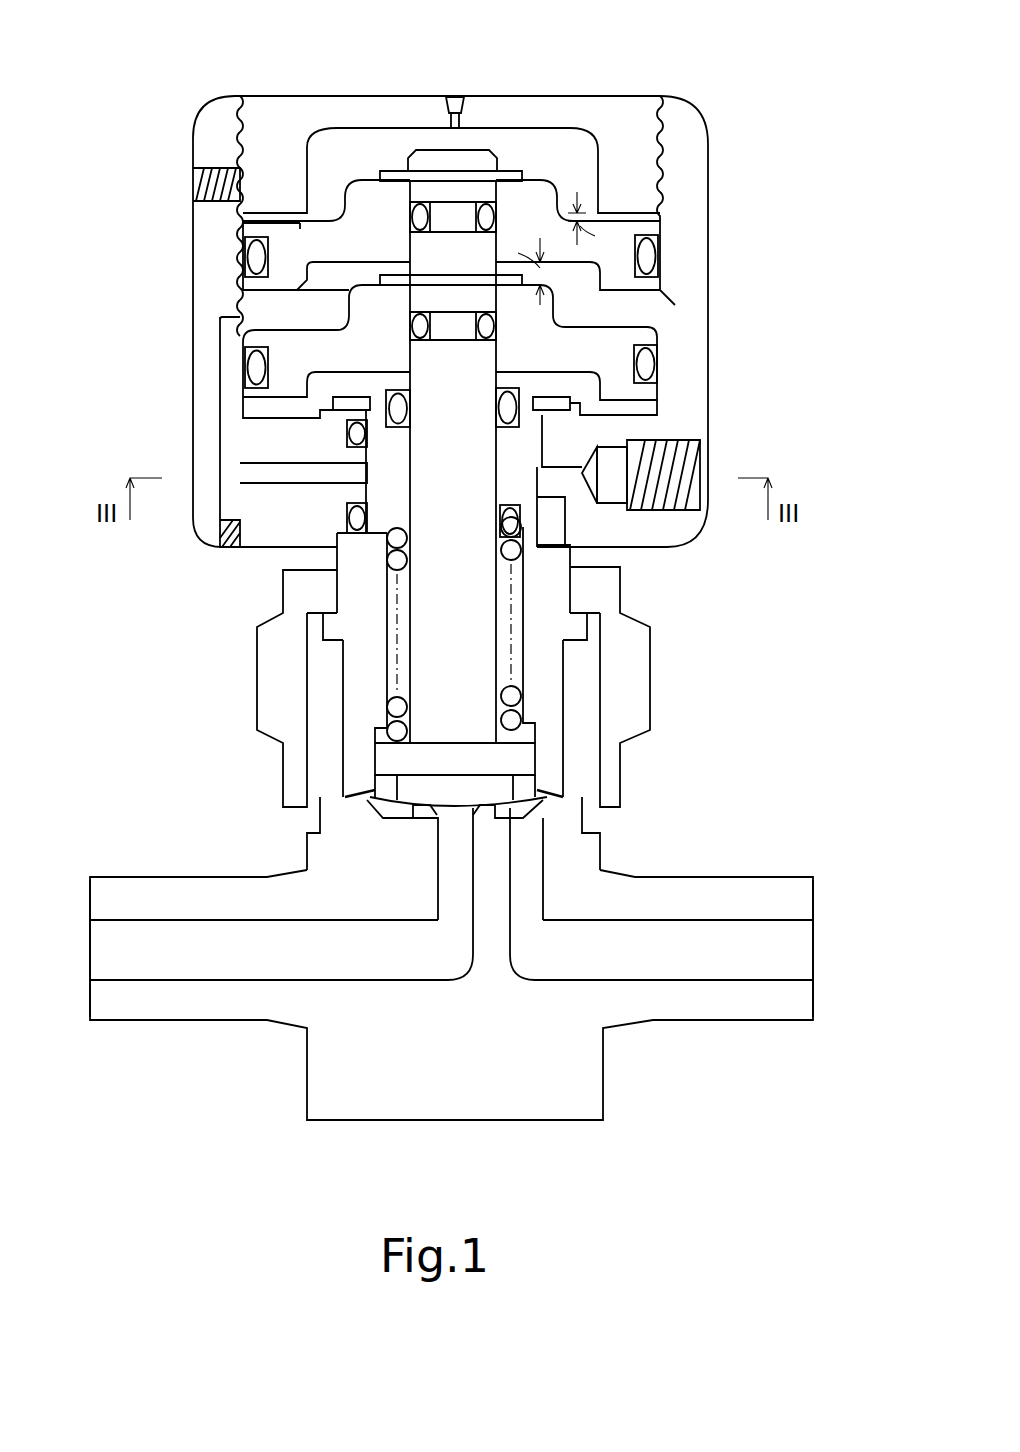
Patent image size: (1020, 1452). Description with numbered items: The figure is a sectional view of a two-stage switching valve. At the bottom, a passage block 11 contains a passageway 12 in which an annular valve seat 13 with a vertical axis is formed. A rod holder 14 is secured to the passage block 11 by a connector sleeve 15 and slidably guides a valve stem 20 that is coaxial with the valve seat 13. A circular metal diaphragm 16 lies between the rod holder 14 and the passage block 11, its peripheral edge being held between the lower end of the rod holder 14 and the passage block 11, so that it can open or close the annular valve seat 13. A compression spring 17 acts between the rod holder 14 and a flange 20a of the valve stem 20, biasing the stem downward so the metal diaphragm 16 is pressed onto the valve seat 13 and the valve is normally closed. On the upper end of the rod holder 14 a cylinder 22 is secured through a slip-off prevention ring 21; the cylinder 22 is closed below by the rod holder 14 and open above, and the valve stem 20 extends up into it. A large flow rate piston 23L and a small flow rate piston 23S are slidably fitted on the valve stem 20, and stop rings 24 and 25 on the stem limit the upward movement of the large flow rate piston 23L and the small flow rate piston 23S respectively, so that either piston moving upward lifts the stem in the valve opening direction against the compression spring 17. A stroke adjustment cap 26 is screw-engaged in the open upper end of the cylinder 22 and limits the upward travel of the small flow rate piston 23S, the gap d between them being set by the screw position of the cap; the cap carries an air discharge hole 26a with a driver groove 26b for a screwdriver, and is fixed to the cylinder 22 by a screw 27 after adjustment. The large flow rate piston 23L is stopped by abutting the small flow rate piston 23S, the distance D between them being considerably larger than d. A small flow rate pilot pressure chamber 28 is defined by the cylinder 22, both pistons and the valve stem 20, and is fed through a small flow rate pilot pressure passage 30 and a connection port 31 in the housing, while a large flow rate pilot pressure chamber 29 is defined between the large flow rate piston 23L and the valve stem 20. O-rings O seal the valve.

The passage block 11 is at (451, 969).
The passageway 12 is at (451, 926).
The annular valve seat 13 is at (444, 890).
The rod holder 14 is at (389, 629).
The connector sleeve 15 is at (422, 687).
The circular metal diaphragm 16 is at (478, 833).
The compression spring 17 is at (540, 629).
The valve stem 20 is at (397, 489).
The flange 20a is at (380, 784).
The slip-off prevention ring 21 is at (544, 415).
The cylinder 22 is at (481, 321).
The small flow rate piston 23S is at (209, 250).
The large flow rate piston 23L is at (385, 360).
The stop ring 24 is at (325, 286).
The stop ring 25 is at (484, 91).
The stroke adjustment cap 26 is at (450, 183).
The air discharge hole 26a is at (487, 92).
The driver groove 26b is at (421, 83).
The screw 27 is at (182, 172).
The small flow rate pilot pressure chamber 28 is at (540, 291).
The large flow rate pilot pressure chamber 29 is at (506, 397).
The small flow rate pilot pressure passage 30 is at (400, 453).
The small flow rate pilot pressure connection port 31 is at (653, 481).
The O-ring O is at (399, 369).
The distance D is at (524, 265).
The distance d is at (589, 224).